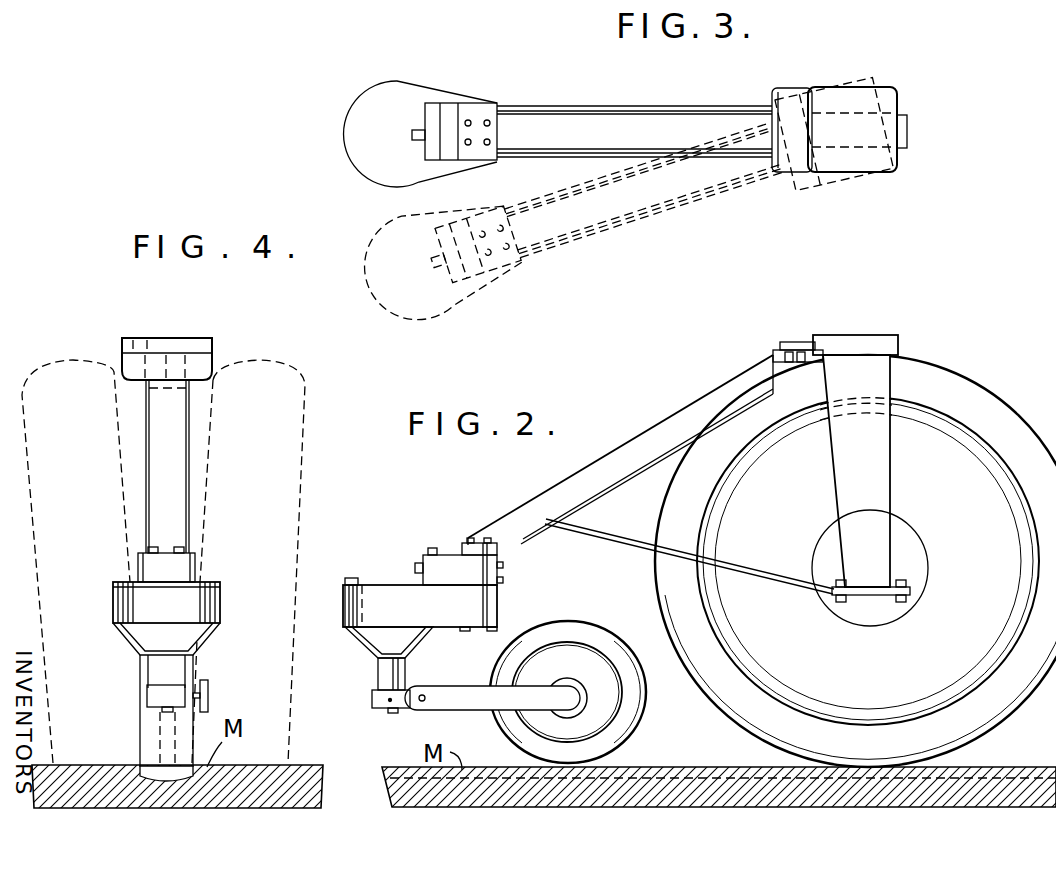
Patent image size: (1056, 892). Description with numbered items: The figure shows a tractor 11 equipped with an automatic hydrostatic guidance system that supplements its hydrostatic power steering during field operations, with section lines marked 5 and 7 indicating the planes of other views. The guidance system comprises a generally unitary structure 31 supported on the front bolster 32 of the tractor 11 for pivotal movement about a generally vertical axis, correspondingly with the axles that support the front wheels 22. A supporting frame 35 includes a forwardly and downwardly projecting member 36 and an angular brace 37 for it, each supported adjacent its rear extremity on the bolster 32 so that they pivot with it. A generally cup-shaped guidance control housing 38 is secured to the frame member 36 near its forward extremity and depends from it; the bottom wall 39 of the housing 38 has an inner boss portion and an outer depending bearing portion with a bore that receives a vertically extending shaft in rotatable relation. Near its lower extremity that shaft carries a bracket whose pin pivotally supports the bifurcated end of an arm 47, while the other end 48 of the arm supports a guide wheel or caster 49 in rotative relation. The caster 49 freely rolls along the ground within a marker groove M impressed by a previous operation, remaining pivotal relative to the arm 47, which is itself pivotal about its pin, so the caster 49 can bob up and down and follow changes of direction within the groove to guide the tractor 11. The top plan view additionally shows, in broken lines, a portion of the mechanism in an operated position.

In FIG. 2, the tractor 11 is at (970, 366).
In FIG. 4, the front wheels 22 is at (40, 565).
In FIG. 2, the front wheels 22 is at (1005, 401).
In FIG. 2, the unitary structure 31 is at (478, 528).
In FIG. 2, the front bolster 32 is at (898, 358).
In FIG. 2, the supporting frame 35 is at (633, 437).
In FIG. 3, the frame member 36 is at (651, 108).
In FIG. 4, the frame member 36 is at (176, 481).
In FIG. 2, the frame member 36 is at (684, 408).
In FIG. 2, the angular brace 37 is at (620, 543).
In FIG. 3, the guidance control housing 38 is at (372, 175).
In FIG. 4, the guidance control housing 38 is at (222, 605).
In FIG. 2, the guidance control housing 38 is at (341, 603).
In FIG. 2, the bottom wall 39 is at (448, 628).
In FIG. 2, the arm 47 is at (466, 706).
In FIG. 2, the other end of arm 48 is at (548, 716).
In FIG. 2, the guide wheel or caster 49 is at (606, 637).
In FIG. 4, the section line 5- 5 is at (133, 665).
In FIG. 2, the section line 7- 7 is at (412, 565).